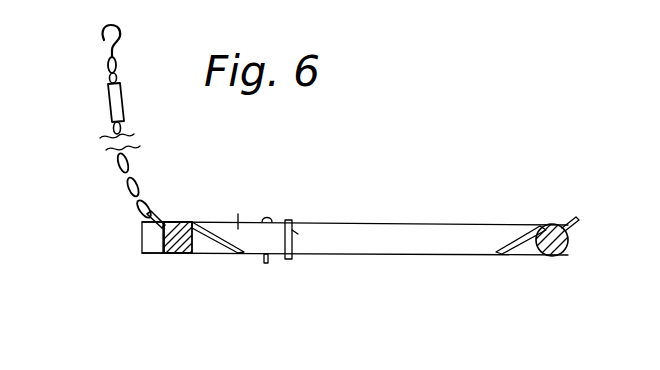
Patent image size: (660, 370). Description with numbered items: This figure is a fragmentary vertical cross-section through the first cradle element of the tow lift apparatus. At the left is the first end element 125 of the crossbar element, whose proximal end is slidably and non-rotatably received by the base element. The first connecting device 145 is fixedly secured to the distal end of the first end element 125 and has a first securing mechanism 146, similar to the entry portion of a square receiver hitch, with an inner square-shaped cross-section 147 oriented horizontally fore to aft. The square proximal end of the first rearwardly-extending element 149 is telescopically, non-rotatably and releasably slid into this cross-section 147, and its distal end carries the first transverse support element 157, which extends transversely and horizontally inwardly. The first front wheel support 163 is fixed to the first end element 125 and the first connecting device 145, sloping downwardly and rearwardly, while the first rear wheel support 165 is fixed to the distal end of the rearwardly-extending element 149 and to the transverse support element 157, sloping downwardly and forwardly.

The first end element 125 is at (180, 224).
The first connecting device 145 is at (148, 252).
The first securing mechanism 146 is at (272, 182).
The inner square-shaped cross-section 147 is at (317, 223).
The first rearwardly-extending element 149 is at (402, 231).
The first transverse support element 157 is at (569, 249).
The first front wheel support 163 is at (236, 252).
The first rear wheel support 165 is at (523, 249).